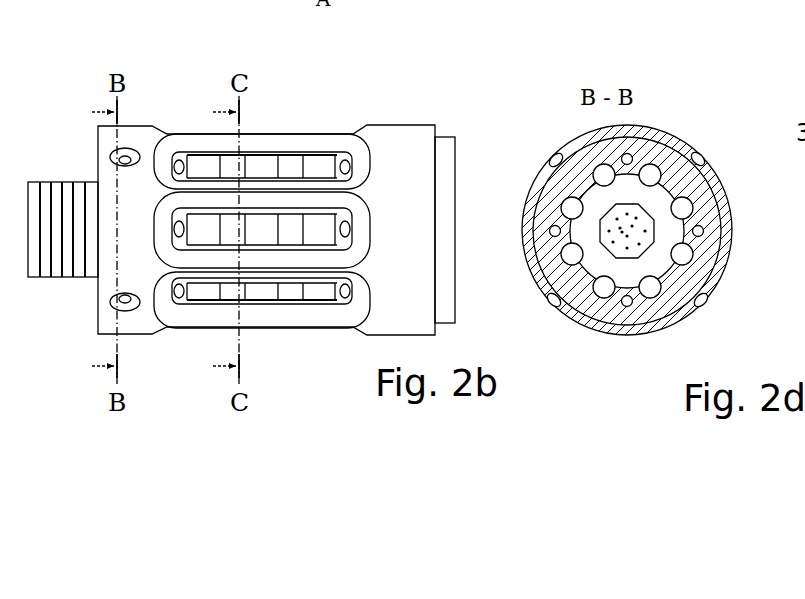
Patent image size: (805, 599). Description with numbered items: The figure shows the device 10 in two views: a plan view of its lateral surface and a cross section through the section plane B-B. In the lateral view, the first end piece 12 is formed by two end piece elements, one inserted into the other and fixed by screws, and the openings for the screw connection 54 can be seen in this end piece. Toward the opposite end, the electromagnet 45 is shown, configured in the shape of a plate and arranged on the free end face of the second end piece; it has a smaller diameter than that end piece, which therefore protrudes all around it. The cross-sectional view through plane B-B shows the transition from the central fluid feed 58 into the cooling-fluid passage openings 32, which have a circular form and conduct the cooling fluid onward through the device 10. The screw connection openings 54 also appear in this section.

In FIG. 2B, the device 10 is at (278, 106).
In FIG. 2B, the first end piece 12 is at (135, 322).
In FIG. 2D, the first end piece 12 is at (580, 137).
In FIG. 2D, the cooling-fluid passage openings 32 is at (652, 175).
In FIG. 2B, the electromagnet 45 is at (445, 148).
In FIG. 2B, the openings for the screw connection 54 is at (122, 160).
In FIG. 2D, the openings for the screw connection 54 is at (699, 160).
In FIG. 2B, the central fluid feed 58 is at (52, 180).